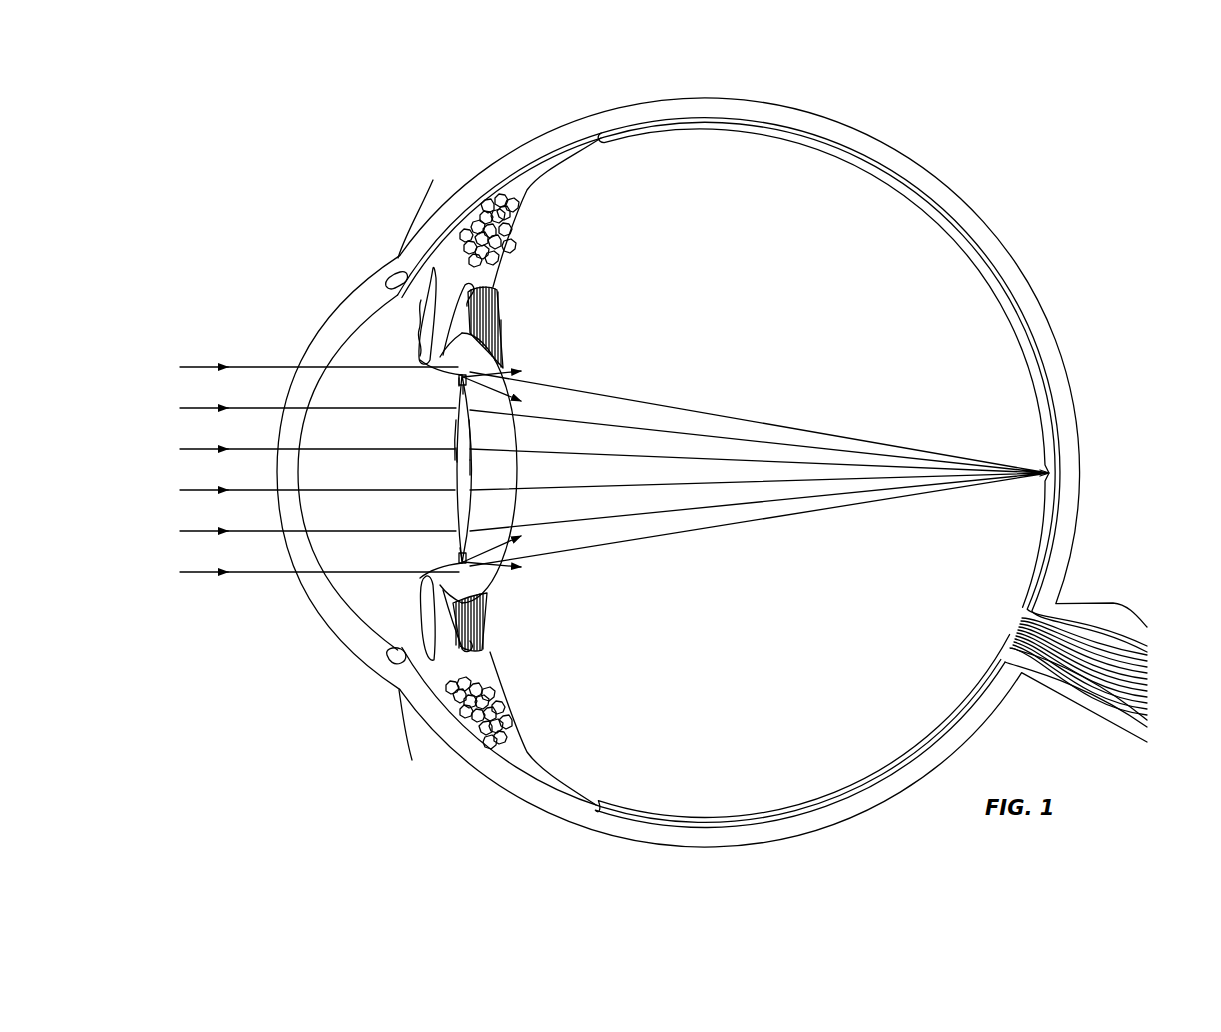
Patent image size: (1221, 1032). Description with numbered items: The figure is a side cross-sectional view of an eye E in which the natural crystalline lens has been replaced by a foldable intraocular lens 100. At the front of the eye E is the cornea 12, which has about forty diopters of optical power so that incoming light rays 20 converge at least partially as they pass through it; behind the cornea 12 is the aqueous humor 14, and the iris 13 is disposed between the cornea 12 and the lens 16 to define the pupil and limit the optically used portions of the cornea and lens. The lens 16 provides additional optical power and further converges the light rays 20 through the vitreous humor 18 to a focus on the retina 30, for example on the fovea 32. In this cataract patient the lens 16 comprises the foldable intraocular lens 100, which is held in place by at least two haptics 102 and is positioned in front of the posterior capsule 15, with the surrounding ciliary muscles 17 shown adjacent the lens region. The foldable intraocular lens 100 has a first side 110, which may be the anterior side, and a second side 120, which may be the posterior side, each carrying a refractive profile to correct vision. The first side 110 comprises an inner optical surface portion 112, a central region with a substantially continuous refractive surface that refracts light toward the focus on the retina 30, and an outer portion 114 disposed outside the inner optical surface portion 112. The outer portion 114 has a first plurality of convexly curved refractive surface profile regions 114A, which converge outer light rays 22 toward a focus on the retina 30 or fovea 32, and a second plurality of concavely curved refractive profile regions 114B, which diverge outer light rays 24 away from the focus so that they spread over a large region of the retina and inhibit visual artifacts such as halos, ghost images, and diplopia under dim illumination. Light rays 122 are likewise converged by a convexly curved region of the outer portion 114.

The cornea 12 is at (333, 607).
The iris 13 is at (376, 654).
The aqueous humor 14 is at (338, 575).
The posterior capsule 15 is at (490, 594).
The lens 16 is at (412, 360).
The ciliary muscles 17 is at (505, 238).
The vitreous humor 18 is at (799, 257).
The light rays 20 is at (243, 360).
The outer light rays 22 is at (575, 392).
The divergent outer light rays 24 is at (512, 365).
The retina 30 is at (1047, 412).
The fovea 32 is at (1050, 473).
The foldable intraocular lens 100 is at (464, 493).
The haptics 102 is at (430, 372).
The first side 110 is at (450, 438).
The inner optical surface portion 112 is at (455, 455).
The outer portion 114 is at (458, 556).
The convexly curved refractive surface profile regions 114A is at (456, 386).
The concavely curved refractive profile regions 114B is at (459, 393).
The second side 120 is at (480, 433).
The light rays 122 is at (470, 465).
The eye E is at (1102, 346).